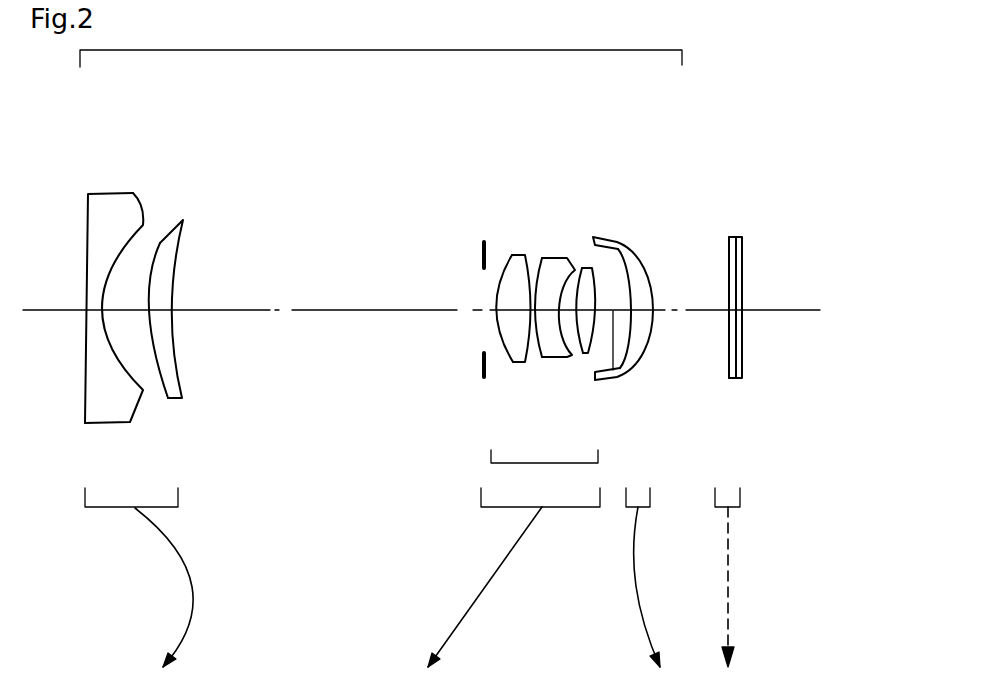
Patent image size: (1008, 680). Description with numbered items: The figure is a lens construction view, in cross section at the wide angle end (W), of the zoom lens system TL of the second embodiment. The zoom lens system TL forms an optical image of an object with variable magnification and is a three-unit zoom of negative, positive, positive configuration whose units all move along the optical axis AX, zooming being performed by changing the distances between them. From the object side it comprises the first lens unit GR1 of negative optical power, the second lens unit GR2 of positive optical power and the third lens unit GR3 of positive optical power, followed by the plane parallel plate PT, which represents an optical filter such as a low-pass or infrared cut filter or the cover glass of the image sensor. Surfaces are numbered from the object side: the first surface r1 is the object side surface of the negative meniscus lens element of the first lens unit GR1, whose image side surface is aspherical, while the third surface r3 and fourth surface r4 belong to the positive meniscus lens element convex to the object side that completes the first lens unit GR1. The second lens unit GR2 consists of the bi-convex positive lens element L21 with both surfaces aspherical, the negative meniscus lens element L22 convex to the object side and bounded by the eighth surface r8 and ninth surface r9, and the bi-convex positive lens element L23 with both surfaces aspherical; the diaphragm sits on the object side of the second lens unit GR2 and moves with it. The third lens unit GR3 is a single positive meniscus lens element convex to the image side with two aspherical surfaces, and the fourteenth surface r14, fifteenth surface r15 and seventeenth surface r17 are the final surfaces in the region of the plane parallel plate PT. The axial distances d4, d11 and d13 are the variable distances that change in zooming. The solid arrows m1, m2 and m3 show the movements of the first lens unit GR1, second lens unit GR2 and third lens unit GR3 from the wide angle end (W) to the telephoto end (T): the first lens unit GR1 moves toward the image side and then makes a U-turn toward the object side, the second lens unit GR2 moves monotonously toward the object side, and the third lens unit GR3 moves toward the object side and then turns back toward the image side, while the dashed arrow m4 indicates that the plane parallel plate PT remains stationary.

The zoom lens system TL is at (381, 42).
The optical axis AX is at (788, 311).
The first lens unit GR1 is at (149, 313).
The second lens unit GR2 is at (518, 297).
The third lens unit GR3 is at (650, 357).
The plane parallel plate PT is at (781, 331).
The first surface r1 is at (88, 208).
The third surface r3 is at (158, 240).
The fourth surface r4 is at (177, 263).
The eighth surface r8 is at (533, 265).
The ninth surface r9 is at (567, 265).
The fourteenth surface r14 is at (729, 252).
The fifteenth surface r15 is at (792, 273).
The seventeenth surface r17 is at (742, 273).
The fourth axial distance d4 is at (330, 293).
The eleventh axial distance d11 is at (613, 370).
The thirteenth axial distance d13 is at (689, 293).
The bi-convex positive lens element L21 is at (485, 270).
The negative meniscus lens element L22 is at (547, 298).
The bi-convex positive lens element L23 is at (613, 265).
The solid arrow (first lens unit movement) m1 is at (193, 588).
The solid arrow (second lens unit movement) m2 is at (493, 578).
The solid arrow (third lens unit movement) m3 is at (635, 585).
The dashed arrow (plate stationary) m4 is at (729, 580).
The wide angle end W is at (875, 500).
The telephoto end T is at (876, 660).